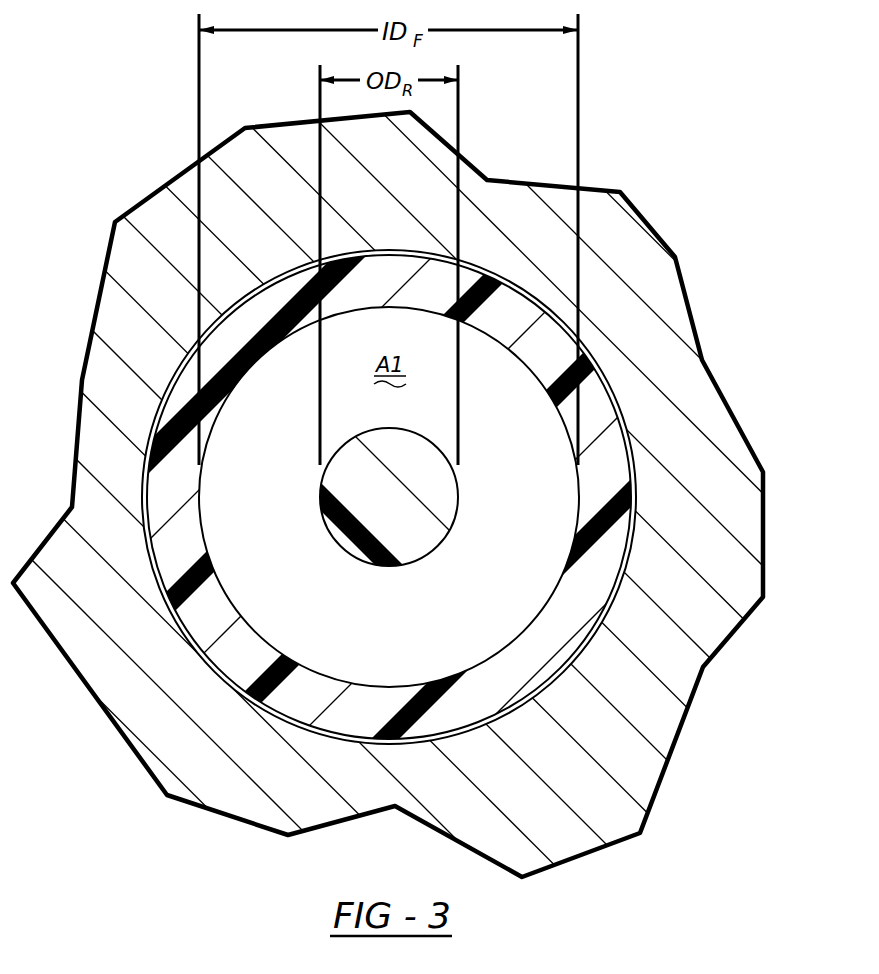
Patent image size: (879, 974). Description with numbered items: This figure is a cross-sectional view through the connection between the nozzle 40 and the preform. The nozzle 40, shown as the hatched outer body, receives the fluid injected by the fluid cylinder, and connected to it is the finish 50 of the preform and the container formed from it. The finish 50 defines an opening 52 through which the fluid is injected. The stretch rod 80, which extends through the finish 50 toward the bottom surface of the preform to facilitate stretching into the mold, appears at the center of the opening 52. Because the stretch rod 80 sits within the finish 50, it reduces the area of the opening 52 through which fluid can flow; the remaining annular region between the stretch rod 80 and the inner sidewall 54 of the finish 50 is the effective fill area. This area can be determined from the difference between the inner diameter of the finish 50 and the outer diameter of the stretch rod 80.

The nozzle 40 is at (127, 327).
The finish 50 is at (208, 620).
The opening 52 is at (200, 513).
The inner sidewall 54 is at (495, 652).
The stretch rod 80 is at (413, 477).